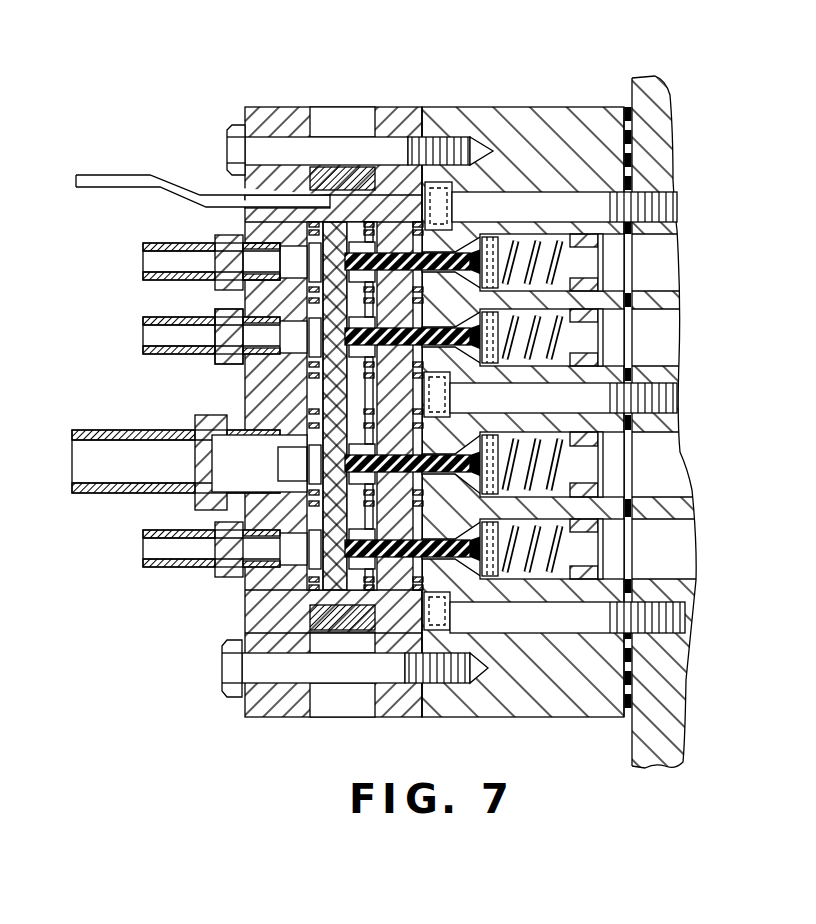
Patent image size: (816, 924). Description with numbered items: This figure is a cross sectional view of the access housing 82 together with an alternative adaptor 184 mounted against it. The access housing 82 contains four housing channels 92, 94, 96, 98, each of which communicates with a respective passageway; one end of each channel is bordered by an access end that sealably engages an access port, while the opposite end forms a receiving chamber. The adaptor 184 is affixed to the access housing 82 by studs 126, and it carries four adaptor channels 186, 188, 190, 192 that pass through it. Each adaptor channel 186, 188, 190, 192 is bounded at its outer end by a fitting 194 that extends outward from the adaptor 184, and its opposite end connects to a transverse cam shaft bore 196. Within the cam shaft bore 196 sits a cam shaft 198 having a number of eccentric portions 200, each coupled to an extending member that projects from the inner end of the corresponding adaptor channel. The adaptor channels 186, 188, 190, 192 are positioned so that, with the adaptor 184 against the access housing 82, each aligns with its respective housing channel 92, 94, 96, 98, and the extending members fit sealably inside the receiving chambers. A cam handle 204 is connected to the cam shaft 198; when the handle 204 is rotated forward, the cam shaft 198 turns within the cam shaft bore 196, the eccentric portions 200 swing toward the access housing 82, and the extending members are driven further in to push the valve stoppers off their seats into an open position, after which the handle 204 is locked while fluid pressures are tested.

The access housing 82 is at (577, 100).
The housing channel 92 is at (612, 557).
The housing channel 94 is at (612, 465).
The housing channel 96 is at (617, 326).
The housing channel 98 is at (617, 253).
The stud 126 is at (233, 131).
The adaptor 184 is at (288, 100).
The adaptor channel 186 is at (292, 535).
The adaptor channel 188 is at (300, 437).
The adaptor channel 190 is at (228, 362).
The adaptor channel 192 is at (288, 258).
The fitting 194 is at (163, 245).
The cam shaft bore 196 is at (452, 396).
The cam shaft 198 is at (337, 417).
The eccentric portion 200 is at (330, 556).
The cam handle 204 is at (124, 178).